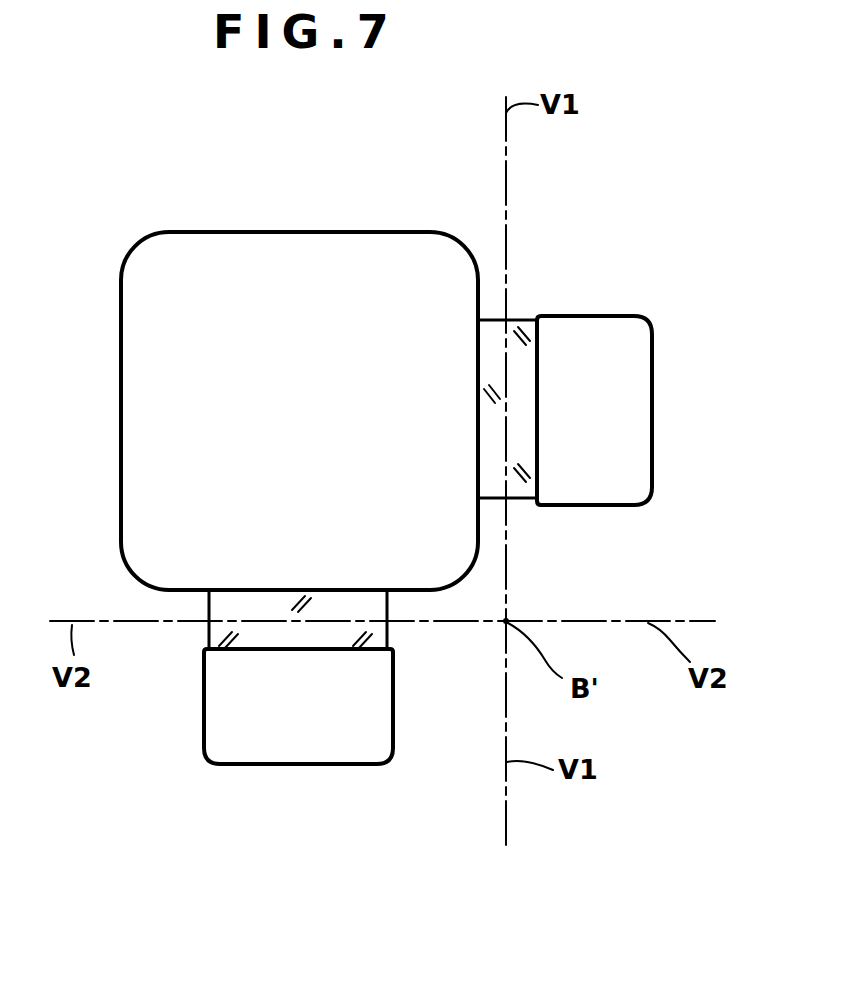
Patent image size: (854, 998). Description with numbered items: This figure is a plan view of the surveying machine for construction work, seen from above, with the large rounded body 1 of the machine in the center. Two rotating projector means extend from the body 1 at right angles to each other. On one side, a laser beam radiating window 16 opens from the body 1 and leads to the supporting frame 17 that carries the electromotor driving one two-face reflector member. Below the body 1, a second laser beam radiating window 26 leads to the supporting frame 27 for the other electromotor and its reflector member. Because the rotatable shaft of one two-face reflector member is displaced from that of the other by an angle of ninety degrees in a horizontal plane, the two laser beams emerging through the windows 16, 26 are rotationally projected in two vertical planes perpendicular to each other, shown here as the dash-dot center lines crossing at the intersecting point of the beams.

The main body 1 is at (236, 250).
The laser beam radiating window 16 is at (525, 330).
The supporting frame for electromotor 17 is at (648, 330).
The laser beam radiating window 26 is at (381, 633).
The supporting frame for electromotor 27 is at (307, 747).